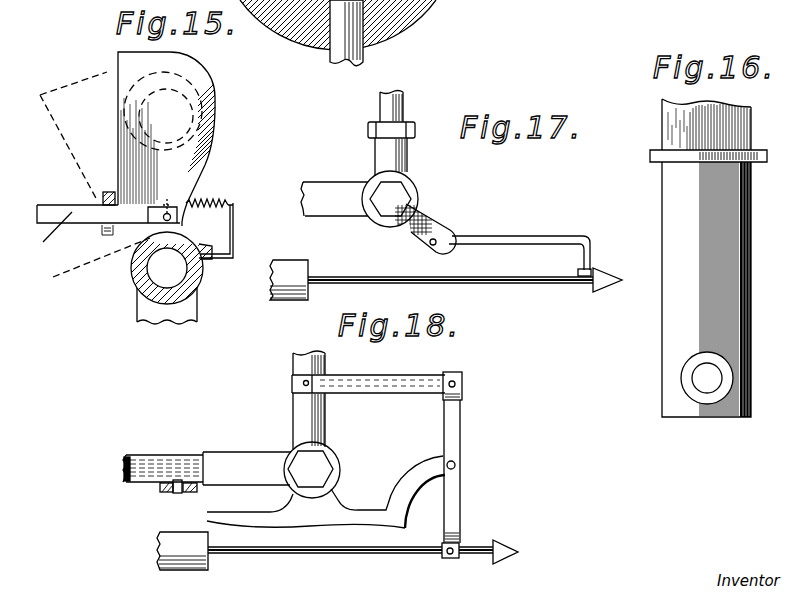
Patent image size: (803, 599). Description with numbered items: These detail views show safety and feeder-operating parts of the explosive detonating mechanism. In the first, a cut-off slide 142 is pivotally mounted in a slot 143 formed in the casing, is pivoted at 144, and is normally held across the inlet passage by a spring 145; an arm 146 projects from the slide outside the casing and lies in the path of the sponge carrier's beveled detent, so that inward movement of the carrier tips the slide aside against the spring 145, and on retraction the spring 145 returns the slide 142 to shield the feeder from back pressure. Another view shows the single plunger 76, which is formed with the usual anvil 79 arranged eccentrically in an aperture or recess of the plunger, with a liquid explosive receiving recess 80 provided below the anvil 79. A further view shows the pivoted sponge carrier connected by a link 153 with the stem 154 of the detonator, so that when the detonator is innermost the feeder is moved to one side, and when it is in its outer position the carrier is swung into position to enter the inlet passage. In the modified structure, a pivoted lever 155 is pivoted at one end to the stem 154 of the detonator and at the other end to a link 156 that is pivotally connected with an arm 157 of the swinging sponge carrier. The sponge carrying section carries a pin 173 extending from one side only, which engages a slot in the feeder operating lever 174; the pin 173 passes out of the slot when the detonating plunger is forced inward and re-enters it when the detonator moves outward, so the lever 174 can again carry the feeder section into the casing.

In FIG. 16, the plunger 76 is at (668, 317).
In FIG. 16, the anvil 79 is at (702, 373).
In FIG. 16, the liquid explosive receiving recess 80 is at (693, 392).
In FIG. 15, the cut-off slide 142 is at (180, 65).
In FIG. 15, the slot 143 is at (203, 152).
In FIG. 15, the pivot 144 is at (152, 145).
In FIG. 15, the spring 145 is at (262, 179).
In FIG. 15, the arm 146 is at (80, 247).
In FIG. 17, the link 153 is at (526, 236).
In FIG. 17, the stem 154 is at (548, 283).
In FIG. 18, the stem 154 is at (409, 556).
In FIG. 18, the pivoted lever 155 is at (461, 499).
In FIG. 18, the link 156 is at (395, 393).
In FIG. 18, the arm 157 is at (324, 363).
In FIG. 18, the pin 173 is at (176, 494).
In FIG. 18, the feeder operating lever 174 is at (196, 491).